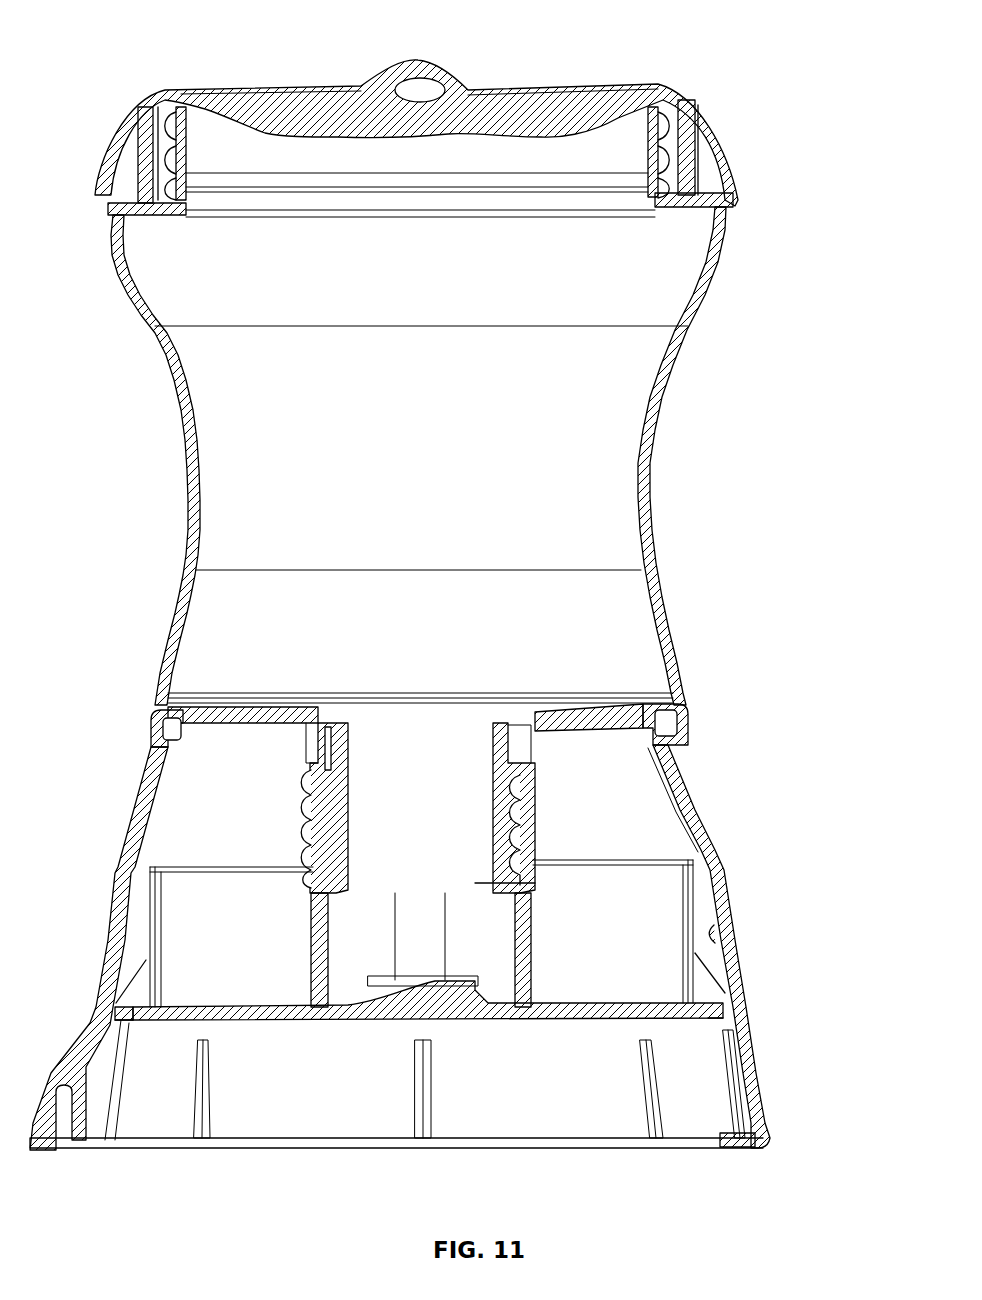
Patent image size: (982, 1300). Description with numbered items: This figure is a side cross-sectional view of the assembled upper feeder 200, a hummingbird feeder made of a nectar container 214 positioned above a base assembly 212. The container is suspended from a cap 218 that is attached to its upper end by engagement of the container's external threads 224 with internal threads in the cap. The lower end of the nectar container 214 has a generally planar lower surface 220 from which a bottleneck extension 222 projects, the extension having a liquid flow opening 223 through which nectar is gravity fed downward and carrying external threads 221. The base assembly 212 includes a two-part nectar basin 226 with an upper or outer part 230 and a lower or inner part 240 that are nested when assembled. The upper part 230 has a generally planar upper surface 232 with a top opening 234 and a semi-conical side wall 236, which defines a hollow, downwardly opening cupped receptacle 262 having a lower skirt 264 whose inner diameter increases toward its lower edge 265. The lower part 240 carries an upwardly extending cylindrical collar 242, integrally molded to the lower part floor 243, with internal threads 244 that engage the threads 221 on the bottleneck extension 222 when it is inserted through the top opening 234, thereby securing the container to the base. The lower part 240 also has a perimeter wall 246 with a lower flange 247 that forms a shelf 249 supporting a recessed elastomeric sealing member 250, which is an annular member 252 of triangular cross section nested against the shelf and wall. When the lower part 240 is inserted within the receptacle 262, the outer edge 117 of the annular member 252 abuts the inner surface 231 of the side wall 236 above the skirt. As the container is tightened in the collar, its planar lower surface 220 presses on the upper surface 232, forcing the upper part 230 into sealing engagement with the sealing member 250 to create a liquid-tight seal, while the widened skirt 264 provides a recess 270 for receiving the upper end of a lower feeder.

The upper feeder 200 is at (796, 37).
The cap 218 is at (715, 130).
The external threads 224 is at (662, 142).
The nectar container 214 is at (708, 308).
The top opening 234 is at (515, 735).
The planar lower surface 220 is at (628, 707).
The planar upper surface 232 is at (325, 780).
The bottleneck extension 222 is at (312, 740).
The external threads 221 is at (320, 790).
The collar 242 is at (533, 797).
The internal threads 244 is at (533, 843).
The liquid flow opening 223 is at (480, 883).
The base assembly 212 is at (832, 752).
The nectar basin 226 is at (65, 845).
The upper part 230 is at (772, 858).
The side wall 236 is at (743, 983).
The recessed elastomeric sealing member 250 is at (733, 937).
The perimeter wall 246 is at (152, 937).
The lower part 240 is at (702, 918).
The cupped receptacle 262 is at (142, 959).
The inner surface 231 is at (720, 958).
The outer edge 117 is at (117, 1013).
The annular member 252 is at (718, 997).
The lower flange 247 is at (123, 1028).
The recess 270 is at (498, 1110).
The shelf 249 is at (147, 1017).
The lower part floor 243 is at (587, 990).
The lower skirt 264 is at (760, 1093).
The lower edge 265 is at (752, 1147).